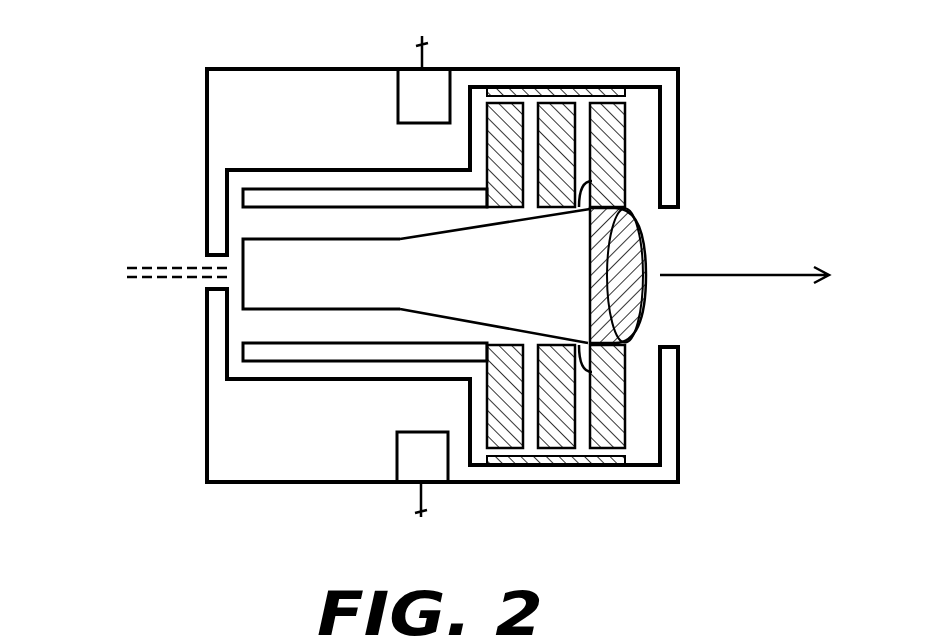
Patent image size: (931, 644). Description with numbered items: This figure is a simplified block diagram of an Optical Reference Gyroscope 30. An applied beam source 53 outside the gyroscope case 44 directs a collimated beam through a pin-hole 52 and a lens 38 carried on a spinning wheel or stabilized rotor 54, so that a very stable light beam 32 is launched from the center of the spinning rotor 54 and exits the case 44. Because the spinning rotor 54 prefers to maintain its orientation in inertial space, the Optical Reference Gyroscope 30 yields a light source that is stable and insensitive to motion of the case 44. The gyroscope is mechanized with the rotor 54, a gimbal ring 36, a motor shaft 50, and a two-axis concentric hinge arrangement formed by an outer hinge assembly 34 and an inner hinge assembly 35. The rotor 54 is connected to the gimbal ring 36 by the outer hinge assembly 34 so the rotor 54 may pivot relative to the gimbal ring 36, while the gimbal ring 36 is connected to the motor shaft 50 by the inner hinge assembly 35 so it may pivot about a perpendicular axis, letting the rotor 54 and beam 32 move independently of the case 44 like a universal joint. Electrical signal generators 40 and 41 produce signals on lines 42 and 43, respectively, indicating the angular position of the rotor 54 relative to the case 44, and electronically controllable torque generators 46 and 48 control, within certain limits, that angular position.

The Optical Reference Gyroscope 30 is at (650, 45).
The light beam 32 is at (745, 275).
The outer hinge assembly 34 is at (586, 178).
The inner hinge assembly 35 is at (530, 103).
The gimbal ring 36 is at (570, 103).
The lens 38 is at (657, 312).
The electrical signal generator 40 is at (398, 108).
The electrical signal generator 41 is at (424, 432).
The line 42 is at (438, 51).
The line 43 is at (418, 505).
The gyroscope case 44 is at (302, 69).
The torque generator 46 is at (555, 88).
The torque generator 48 is at (598, 464).
The motor shaft 50 is at (505, 448).
The pin-hole 52 is at (244, 272).
The applied beam source 53 is at (160, 268).
The spinning rotor 54 is at (592, 267).